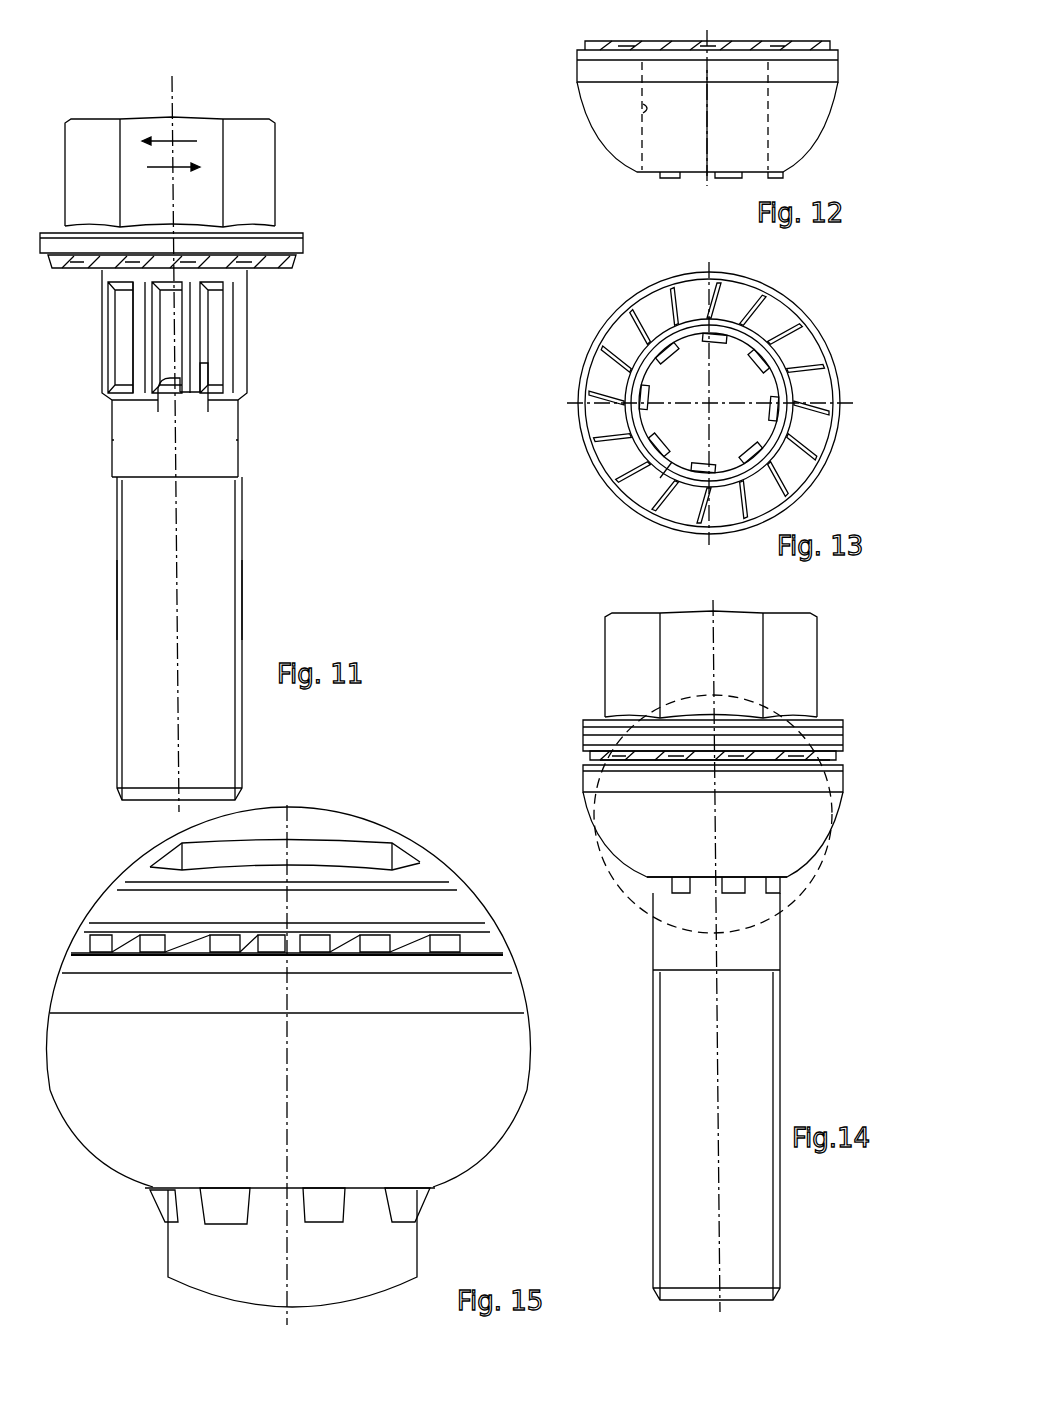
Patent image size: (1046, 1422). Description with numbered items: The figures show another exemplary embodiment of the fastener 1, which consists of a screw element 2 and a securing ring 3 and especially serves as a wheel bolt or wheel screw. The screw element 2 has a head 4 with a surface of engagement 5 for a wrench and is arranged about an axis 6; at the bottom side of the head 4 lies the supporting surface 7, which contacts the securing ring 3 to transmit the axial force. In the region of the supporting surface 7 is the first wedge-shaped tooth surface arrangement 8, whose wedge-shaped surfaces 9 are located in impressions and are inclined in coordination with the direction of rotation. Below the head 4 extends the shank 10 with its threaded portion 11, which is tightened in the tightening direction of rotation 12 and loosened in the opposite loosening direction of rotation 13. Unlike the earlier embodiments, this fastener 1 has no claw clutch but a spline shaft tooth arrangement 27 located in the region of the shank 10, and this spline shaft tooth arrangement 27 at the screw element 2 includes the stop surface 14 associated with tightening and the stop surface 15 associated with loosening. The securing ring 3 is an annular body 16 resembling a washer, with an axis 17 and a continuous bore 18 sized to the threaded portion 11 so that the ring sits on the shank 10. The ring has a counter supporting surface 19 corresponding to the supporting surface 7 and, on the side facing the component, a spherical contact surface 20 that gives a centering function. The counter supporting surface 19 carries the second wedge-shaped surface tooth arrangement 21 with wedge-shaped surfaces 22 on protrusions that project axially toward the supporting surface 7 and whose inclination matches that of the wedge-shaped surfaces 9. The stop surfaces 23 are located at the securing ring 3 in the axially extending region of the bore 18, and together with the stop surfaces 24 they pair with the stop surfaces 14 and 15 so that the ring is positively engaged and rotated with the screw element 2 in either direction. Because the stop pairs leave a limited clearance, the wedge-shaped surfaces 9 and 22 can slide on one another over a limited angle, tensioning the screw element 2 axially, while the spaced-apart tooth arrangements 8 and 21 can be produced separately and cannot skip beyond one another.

In FIG. 14, the fastener 1 is at (546, 641).
In FIG. 15, the fastener 1 is at (100, 873).
In FIG. 11, the screw element 2 is at (255, 421).
In FIG. 14, the screw element 2 is at (816, 660).
In FIG. 12, the securing ring 3 is at (572, 136).
In FIG. 13, the securing ring 3 is at (583, 340).
In FIG. 14, the securing ring 3 is at (584, 805).
In FIG. 15, the securing ring 3 is at (304, 1100).
In FIG. 11, the head 4 is at (192, 137).
In FIG. 14, the head 4 is at (678, 654).
In FIG. 15, the head 4 is at (285, 825).
In FIG. 11, the surface of engagement 5 is at (253, 148).
In FIG. 14, the surface of engagement 5 is at (615, 660).
In FIG. 15, the surface of engagement 5 is at (335, 845).
In FIG. 11, the axis 6 is at (178, 568).
In FIG. 15, the axis 6 is at (284, 855).
In FIG. 11, the supporting surface 7 is at (170, 285).
In FIG. 14, the supporting surface 7 is at (735, 717).
In FIG. 11, the first wedge-shaped tooth surface arrangement 8 is at (75, 282).
In FIG. 14, the first wedge-shaped tooth surface arrangement 8 is at (675, 714).
In FIG. 15, the first wedge-shaped tooth surface arrangement 8 is at (271, 915).
In FIG. 11, the wedge-shaped surfaces 9 is at (168, 268).
In FIG. 14, the wedge-shaped surfaces 9 is at (690, 735).
In FIG. 15, the wedge-shaped surfaces 9 is at (223, 923).
In FIG. 11, the shank 10 is at (218, 452).
In FIG. 11, the threaded portion 11 is at (238, 612).
In FIG. 11, the tightening direction of rotation 12 is at (165, 136).
In FIG. 11, the loosening direction of rotation 13 is at (183, 160).
In FIG. 11, the stop surface 14 is at (158, 412).
In FIG. 11, the stop surface 15 is at (203, 412).
In FIG. 14, the annular body 16 is at (790, 838).
In FIG. 15, the annular body 16 is at (455, 1108).
In FIG. 12, the axis 17 is at (708, 100).
In FIG. 13, the axis 17 is at (705, 400).
In FIG. 15, the axis 17 is at (212, 836).
In FIG. 12, the bore 18 is at (650, 108).
In FIG. 13, the counter supporting surface 19 is at (800, 395).
In FIG. 14, the counter supporting surface 19 is at (853, 755).
In FIG. 14, the contact surface 20 is at (800, 870).
In FIG. 15, the contact surface 20 is at (468, 1165).
In FIG. 14, the second wedge-shaped surface tooth arrangement 21 is at (658, 809).
In FIG. 15, the second wedge-shaped surface tooth arrangement 21 is at (282, 1083).
In FIG. 12, the wedge-shaped surfaces 22 is at (660, 44).
In FIG. 13, the wedge-shaped surfaces 22 is at (757, 500).
In FIG. 14, the wedge-shaped surfaces 22 is at (690, 792).
In FIG. 15, the wedge-shaped surfaces 22 is at (263, 943).
In FIG. 12, the stop surface 23 is at (705, 174).
In FIG. 13, the stop surface 23 is at (640, 420).
In FIG. 15, the stop surface 23 is at (395, 1200).
In FIG. 12, the stop surface 24 is at (740, 176).
In FIG. 13, the stop surface 24 is at (660, 478).
In FIG. 15, the stop surface 24 is at (247, 1210).
In FIG. 11, the spline shaft tooth arrangement 27 is at (252, 355).
In FIG. 12, the spline shaft tooth arrangement 27 is at (672, 178).
In FIG. 14, the spline shaft tooth arrangement 27 is at (668, 893).
In FIG. 15, the spline shaft tooth arrangement 27 is at (205, 1222).